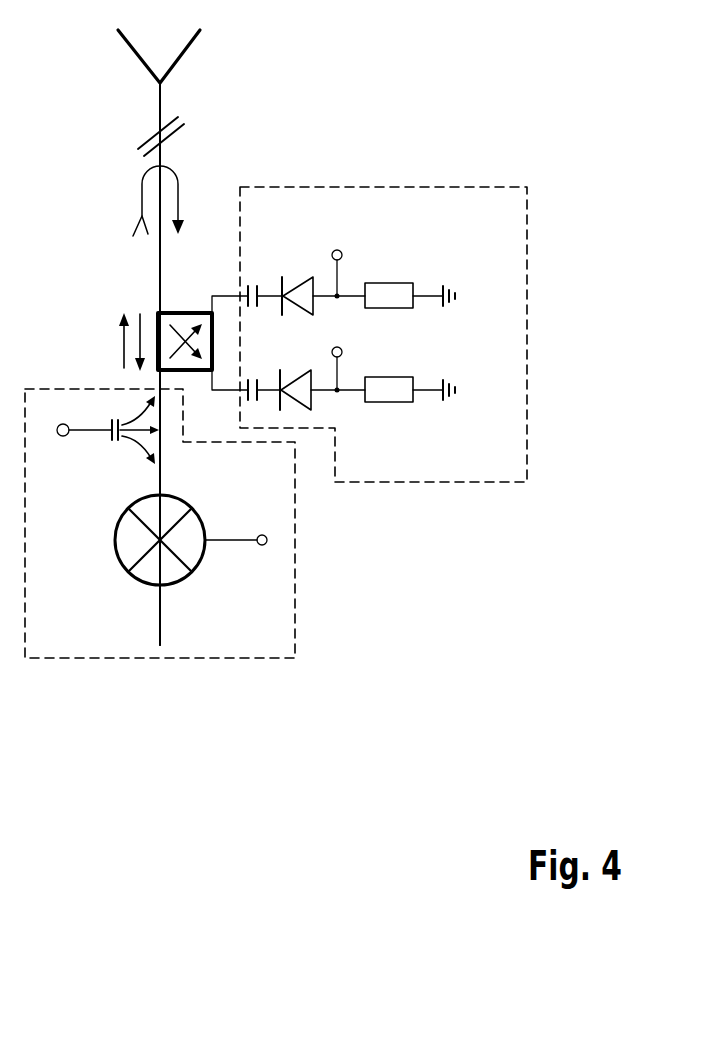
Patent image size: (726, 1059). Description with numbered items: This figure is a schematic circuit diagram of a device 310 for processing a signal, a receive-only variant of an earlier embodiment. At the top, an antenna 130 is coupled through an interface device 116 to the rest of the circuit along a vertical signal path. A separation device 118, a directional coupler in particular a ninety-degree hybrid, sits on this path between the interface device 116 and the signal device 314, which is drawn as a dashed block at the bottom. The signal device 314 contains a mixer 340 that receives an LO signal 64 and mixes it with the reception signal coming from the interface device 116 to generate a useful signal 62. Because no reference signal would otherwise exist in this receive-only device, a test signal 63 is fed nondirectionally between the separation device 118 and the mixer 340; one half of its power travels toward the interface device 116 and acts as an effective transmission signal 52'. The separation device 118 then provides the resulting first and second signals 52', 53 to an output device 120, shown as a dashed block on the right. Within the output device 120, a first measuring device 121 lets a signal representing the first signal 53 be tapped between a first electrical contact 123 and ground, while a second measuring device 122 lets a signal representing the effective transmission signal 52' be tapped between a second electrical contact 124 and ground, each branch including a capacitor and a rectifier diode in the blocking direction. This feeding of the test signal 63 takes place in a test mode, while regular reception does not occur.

The device for processing a signal 310 is at (319, 122).
The transmitting and receiving antenna 130 is at (160, 100).
The interface device 116 is at (160, 127).
The effective transmission signal 52' is at (110, 264).
The first signal 53 is at (180, 183).
The separation device 118 is at (158, 317).
The output device 120 is at (527, 303).
The second electrical contact 124 is at (343, 255).
The second measuring device 122 is at (428, 297).
The first electrical contact 123 is at (345, 353).
The first measuring device 121 is at (420, 408).
The signal device 314 is at (295, 590).
The test signal 63 is at (82, 432).
The mixer 340 is at (177, 583).
The useful signal 62 is at (266, 547).
The LO signal 64 is at (158, 632).